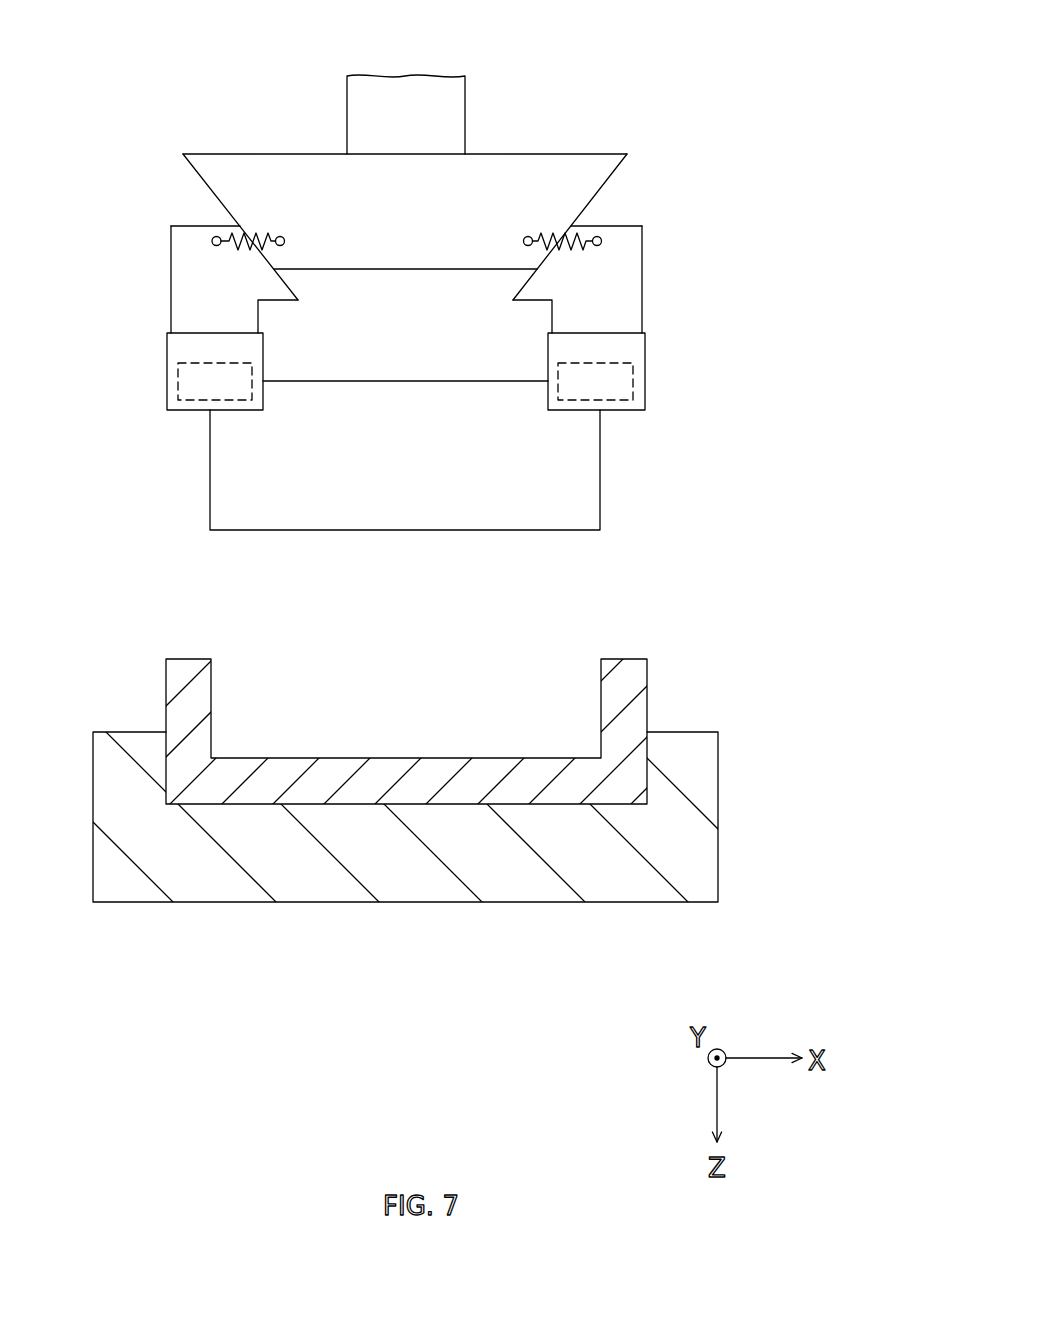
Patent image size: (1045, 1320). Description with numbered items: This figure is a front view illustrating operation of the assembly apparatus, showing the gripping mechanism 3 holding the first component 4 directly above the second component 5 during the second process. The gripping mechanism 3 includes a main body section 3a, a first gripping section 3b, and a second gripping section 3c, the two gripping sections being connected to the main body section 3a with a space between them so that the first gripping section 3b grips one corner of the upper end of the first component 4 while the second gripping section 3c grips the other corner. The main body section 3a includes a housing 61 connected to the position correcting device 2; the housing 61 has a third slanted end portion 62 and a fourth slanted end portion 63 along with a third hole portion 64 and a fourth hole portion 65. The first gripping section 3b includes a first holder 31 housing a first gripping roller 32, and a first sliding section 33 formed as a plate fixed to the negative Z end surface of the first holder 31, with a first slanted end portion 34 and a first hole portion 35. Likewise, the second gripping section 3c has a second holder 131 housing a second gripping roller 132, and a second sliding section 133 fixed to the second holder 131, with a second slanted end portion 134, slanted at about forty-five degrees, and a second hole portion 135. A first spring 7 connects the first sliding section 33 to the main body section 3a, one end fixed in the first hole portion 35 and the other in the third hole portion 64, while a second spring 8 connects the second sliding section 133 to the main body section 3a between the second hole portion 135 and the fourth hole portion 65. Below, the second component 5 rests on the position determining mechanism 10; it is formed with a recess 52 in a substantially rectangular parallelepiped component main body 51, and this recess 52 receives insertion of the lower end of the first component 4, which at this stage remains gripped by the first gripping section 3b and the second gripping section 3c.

The position correcting device 2 is at (347, 125).
The gripping mechanism 3 is at (668, 97).
The main body section 3a is at (553, 128).
The first gripping section 3b is at (128, 228).
The second gripping section 3c is at (732, 235).
The first component 4 is at (600, 517).
The second component 5 is at (728, 688).
The first spring 7 is at (250, 231).
The second spring 8 is at (574, 232).
The position determining mechanism 10 is at (718, 740).
The first holder 31 is at (167, 388).
The first gripping roller 32 is at (195, 402).
The first sliding section 33 is at (171, 267).
The first slanted end portion 34 is at (197, 226).
The first hole portion 35 is at (213, 246).
The component main body 51 is at (647, 693).
The recess 52 is at (557, 673).
The housing 61 is at (508, 153).
The third slanted end portion 62 is at (209, 187).
The fourth slanted end portion 63 is at (598, 190).
The third hole portion 64 is at (285, 240).
The fourth hole portion 65 is at (523, 241).
The second holder 131 is at (645, 390).
The second gripping roller 132 is at (617, 400).
The second sliding section 133 is at (642, 267).
The second slanted end portion 134 is at (613, 226).
The second hole portion 135 is at (593, 247).